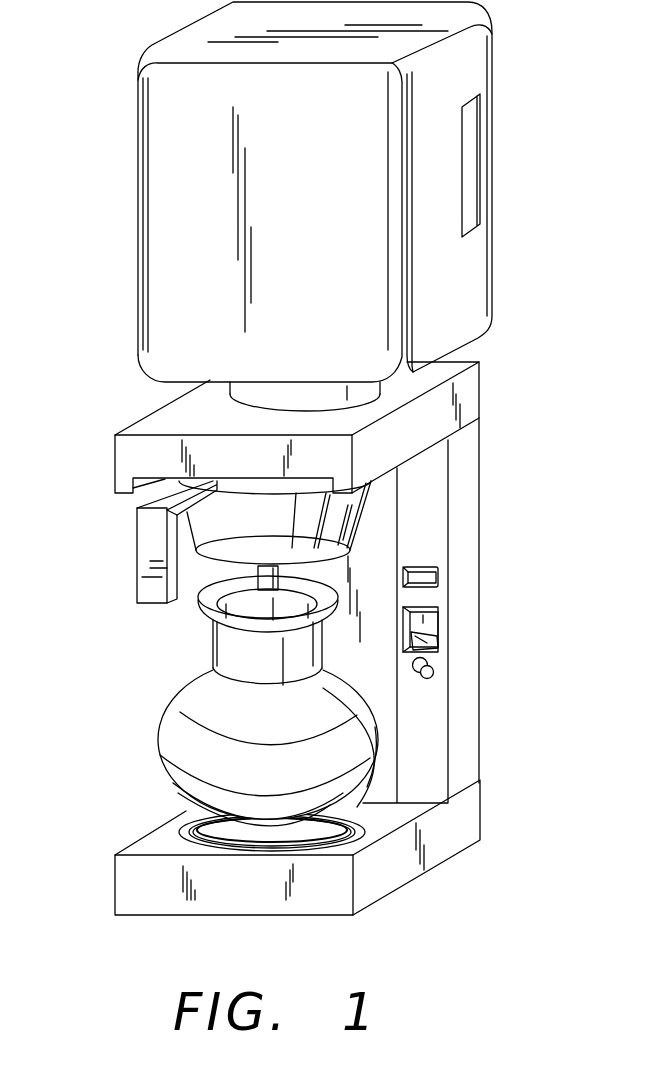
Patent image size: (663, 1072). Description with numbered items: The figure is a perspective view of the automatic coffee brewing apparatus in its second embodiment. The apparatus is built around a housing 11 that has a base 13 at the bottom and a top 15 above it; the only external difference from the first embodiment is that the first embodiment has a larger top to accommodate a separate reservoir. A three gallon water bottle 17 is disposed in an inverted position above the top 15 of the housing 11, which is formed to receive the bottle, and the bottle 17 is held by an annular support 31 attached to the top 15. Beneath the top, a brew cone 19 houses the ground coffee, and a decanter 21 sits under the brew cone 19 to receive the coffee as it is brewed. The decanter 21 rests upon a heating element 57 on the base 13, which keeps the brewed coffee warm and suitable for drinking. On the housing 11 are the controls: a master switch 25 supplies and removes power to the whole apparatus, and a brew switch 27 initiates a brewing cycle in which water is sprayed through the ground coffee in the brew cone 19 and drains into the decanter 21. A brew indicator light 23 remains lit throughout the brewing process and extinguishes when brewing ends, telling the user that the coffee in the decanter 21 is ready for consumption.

The housing 11 is at (475, 482).
The base 13 is at (472, 812).
The top 15 is at (472, 398).
The three gallon water bottle 17 is at (153, 122).
The brew cone 19 is at (197, 522).
The decanter 21 is at (162, 772).
The brew indicator light 23 is at (438, 580).
The master switch 25 is at (440, 635).
The brew switch 27 is at (435, 668).
The annular support 31 is at (263, 390).
The heating element 57 is at (348, 837).